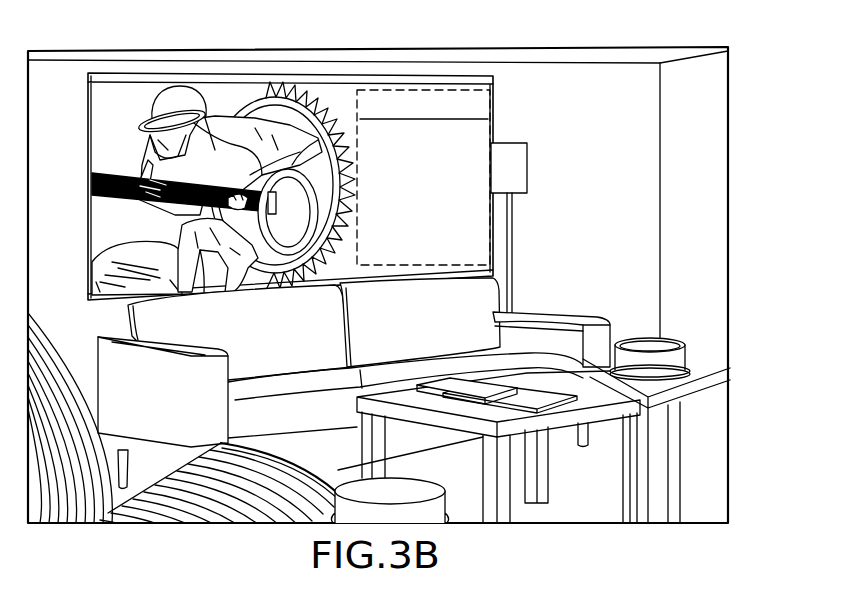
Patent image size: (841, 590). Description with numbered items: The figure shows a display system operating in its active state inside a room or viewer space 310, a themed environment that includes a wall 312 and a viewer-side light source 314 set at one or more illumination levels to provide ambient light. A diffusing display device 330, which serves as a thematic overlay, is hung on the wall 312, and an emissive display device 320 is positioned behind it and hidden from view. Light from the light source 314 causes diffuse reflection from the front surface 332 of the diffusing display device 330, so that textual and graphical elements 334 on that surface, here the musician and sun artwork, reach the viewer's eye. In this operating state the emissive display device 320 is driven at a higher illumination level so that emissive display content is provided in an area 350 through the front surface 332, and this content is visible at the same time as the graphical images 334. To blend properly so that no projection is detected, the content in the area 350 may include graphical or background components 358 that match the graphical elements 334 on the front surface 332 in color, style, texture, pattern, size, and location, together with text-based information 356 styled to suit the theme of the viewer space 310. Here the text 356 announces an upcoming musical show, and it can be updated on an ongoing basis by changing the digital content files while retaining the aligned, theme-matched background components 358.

The viewer space 310 is at (742, 468).
The wall 312 is at (59, 58).
The emissive display device 320 is at (498, 49).
The diffusing display device 330 is at (384, 76).
The front surface 332 is at (320, 90).
The graphical elements 334 is at (272, 122).
The area 350 is at (495, 90).
The text-based information 356 is at (468, 143).
The graphical or background components 358 is at (485, 226).
The viewer-side light source 314 is at (521, 180).